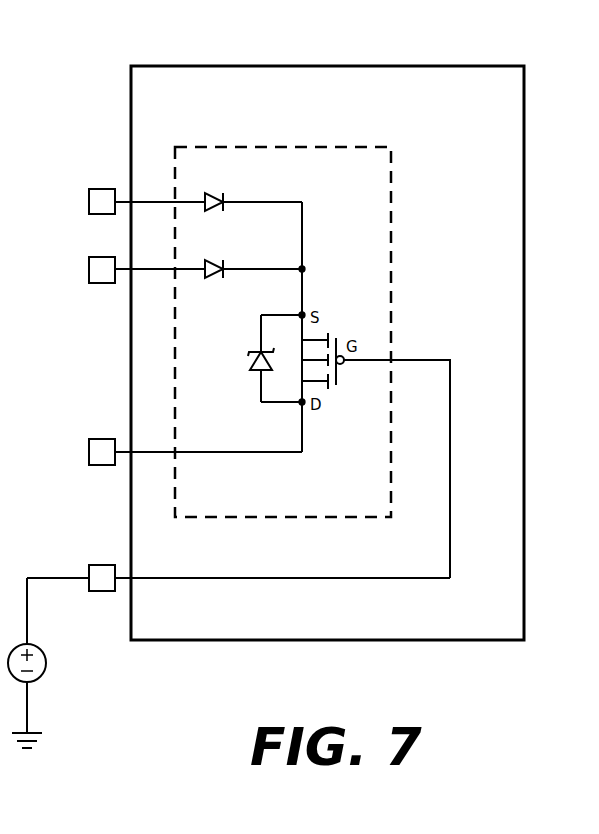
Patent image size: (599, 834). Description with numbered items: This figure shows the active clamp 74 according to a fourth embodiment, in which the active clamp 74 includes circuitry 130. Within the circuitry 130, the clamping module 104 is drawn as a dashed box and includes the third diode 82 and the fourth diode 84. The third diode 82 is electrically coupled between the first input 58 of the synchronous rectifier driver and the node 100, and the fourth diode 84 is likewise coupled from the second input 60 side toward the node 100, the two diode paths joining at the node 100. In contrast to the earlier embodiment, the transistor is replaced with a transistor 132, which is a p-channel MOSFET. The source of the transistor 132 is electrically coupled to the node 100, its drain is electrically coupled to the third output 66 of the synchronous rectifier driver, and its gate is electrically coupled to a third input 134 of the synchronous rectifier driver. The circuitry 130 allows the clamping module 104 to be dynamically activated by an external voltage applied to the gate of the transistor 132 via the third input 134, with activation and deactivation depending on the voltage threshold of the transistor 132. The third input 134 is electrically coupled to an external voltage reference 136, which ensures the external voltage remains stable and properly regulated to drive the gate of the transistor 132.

The active clamp 74 is at (190, 66).
The circuitry 130 is at (420, 140).
The clamping module 104 is at (241, 147).
The first input 58 is at (89, 200).
The second input 60 is at (89, 267).
The third diode 82 is at (208, 196).
The fourth diode 84 is at (208, 263).
The node 100 is at (305, 268).
The transistor 132 is at (261, 335).
The third output 66 is at (89, 449).
The third input 134 is at (91, 567).
The external voltage reference 136 is at (47, 663).